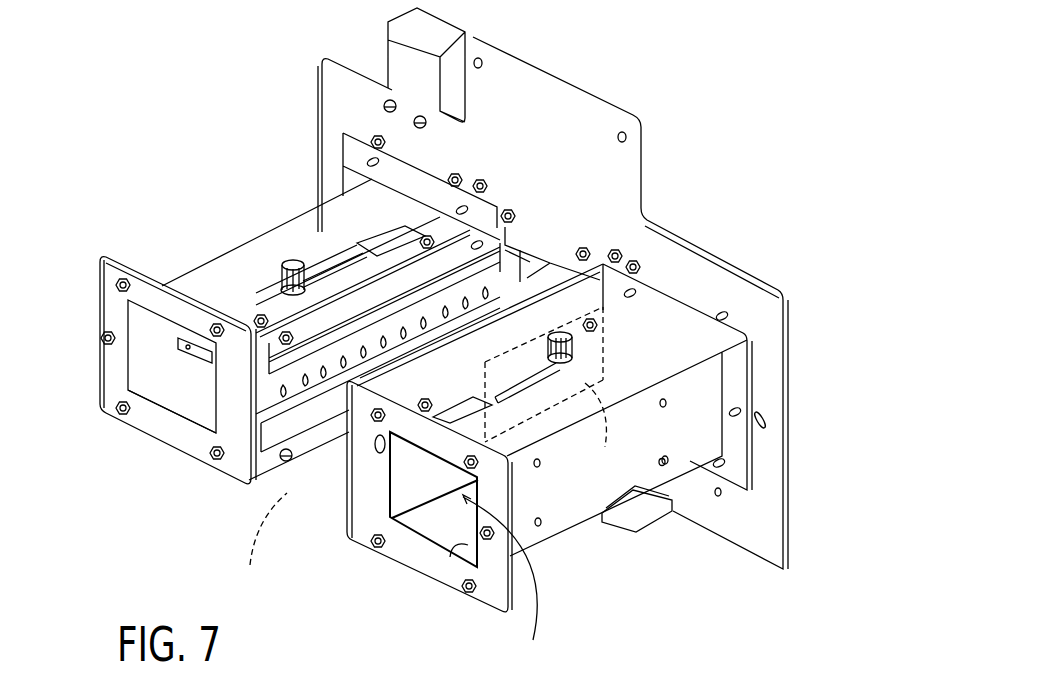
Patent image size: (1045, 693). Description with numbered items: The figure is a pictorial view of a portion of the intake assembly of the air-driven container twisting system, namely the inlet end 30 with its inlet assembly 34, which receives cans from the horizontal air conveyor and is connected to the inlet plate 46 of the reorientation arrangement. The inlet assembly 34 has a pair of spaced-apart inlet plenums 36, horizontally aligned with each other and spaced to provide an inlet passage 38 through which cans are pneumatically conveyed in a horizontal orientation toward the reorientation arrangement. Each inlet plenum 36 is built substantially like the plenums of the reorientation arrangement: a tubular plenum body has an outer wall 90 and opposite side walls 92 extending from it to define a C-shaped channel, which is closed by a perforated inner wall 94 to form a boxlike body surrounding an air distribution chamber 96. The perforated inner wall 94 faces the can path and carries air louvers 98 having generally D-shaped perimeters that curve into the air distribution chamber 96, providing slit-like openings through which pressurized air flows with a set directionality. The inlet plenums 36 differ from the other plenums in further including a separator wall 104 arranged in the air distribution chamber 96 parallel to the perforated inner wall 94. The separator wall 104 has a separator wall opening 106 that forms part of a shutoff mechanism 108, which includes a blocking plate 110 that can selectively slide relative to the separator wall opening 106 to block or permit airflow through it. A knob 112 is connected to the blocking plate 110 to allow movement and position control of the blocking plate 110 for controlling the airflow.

The inlet end 30 is at (156, 128).
The inlet assembly 34 is at (147, 546).
The inlet plenums 36 is at (417, 406).
The inlet passage 38 is at (263, 545).
The inlet plate 46 is at (650, 144).
The outer wall 90 is at (391, 379).
The side walls 92 is at (417, 433).
The perforated inner wall 94 is at (358, 421).
The air distribution chamber 96 is at (150, 355).
The air louvers 98 is at (303, 380).
The separator wall 104 is at (205, 411).
The separator wall opening 106 is at (213, 452).
The shutoff mechanism 108 is at (260, 297).
The blocking plate 110 is at (345, 243).
The knob 112 is at (574, 348).